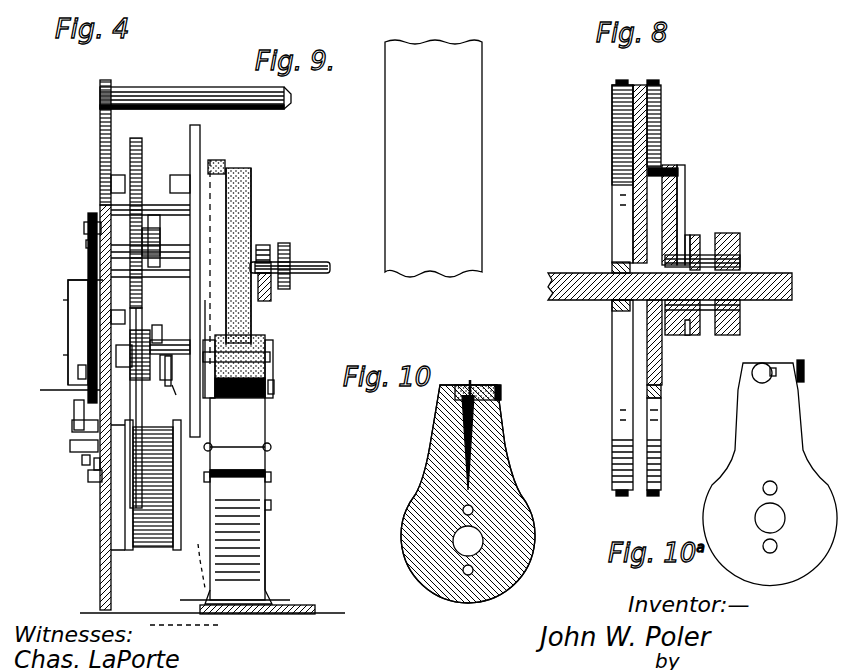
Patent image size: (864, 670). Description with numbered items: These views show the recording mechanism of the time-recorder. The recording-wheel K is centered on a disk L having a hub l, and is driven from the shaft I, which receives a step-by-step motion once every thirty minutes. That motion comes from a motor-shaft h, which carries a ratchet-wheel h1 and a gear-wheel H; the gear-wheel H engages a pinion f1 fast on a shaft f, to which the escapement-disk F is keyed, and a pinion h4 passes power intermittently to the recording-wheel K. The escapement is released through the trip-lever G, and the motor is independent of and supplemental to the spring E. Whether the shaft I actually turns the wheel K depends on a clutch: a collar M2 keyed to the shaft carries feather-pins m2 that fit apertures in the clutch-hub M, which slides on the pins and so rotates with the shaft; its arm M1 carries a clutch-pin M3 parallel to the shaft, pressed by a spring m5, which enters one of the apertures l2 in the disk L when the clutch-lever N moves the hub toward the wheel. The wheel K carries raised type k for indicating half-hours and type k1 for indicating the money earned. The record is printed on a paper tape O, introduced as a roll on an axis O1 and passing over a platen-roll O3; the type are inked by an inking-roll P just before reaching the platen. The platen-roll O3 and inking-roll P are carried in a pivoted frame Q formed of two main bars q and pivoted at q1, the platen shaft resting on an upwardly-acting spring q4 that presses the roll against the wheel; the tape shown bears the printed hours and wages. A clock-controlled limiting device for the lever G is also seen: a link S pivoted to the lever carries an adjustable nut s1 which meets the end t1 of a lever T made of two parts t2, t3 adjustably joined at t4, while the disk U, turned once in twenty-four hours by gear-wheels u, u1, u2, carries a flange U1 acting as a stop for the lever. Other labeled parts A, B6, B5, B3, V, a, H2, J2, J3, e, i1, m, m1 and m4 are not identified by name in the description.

In FIG. 4, the frame plate A is at (100, 197).
In FIG. 4, the top cross bar B6 is at (172, 96).
In FIG. 4, the vertical frame bar B5 is at (200, 140).
In FIG. 4, the base bar B3 is at (200, 585).
In FIG. 4, the guide rod V is at (225, 168).
In FIG. 4, the recording-wheel K is at (251, 186).
In FIG. 8, the recording-wheel K is at (556, 128).
In FIG. 4, the paper tape O is at (238, 501).
In FIG. 9, the paper tape O is at (408, 52).
In FIG. 4, the axis of the tape roll O1 is at (271, 505).
In FIG. 4, the platen-roll O3 is at (273, 368).
In FIG. 4, the inking-roll P is at (205, 302).
In FIG. 4, the pivoted frame Q is at (280, 550).
In FIG. 4, the main bars of frame Q q is at (204, 478).
In FIG. 4, the pivot of frame Q q1 is at (271, 477).
In FIG. 4, the upwardly-acting spring q4 is at (272, 388).
In FIG. 4, the cord a is at (199, 565).
In FIG. 4, the base plate H2 is at (265, 612).
In FIG. 4, the shaft I is at (345, 252).
In FIG. 8, the shaft I is at (572, 270).
In FIG. 4, the collar M2 is at (290, 246).
In FIG. 8, the collar M2 is at (740, 243).
In FIG. 4, the feather-pins m2 is at (266, 244).
In FIG. 8, the feather-pins m2 is at (695, 240).
In FIG. 4, the clutch-lever N is at (271, 290).
In FIG. 4, the clutch-hub M is at (266, 300).
In FIG. 8, the clutch-hub M is at (686, 230).
In FIG. 10, the clutch-hub M is at (516, 480).
In FIG. 10A, the clutch-hub M is at (770, 392).
In FIG. 8, the clutch arm M1 is at (685, 176).
In FIG. 10, the clutch arm M1 is at (525, 404).
In FIG. 8, the clutch-pin M3 is at (668, 165).
In FIG. 10, the clutch-pin M3 is at (468, 398).
In FIG. 10A, the clutch-pin M3 is at (762, 363).
In FIG. 10, the shaft hole m is at (468, 541).
In FIG. 10A, the shaft hole m is at (770, 518).
In FIG. 10, the pin holes m1 is at (470, 512).
In FIG. 10A, the pin holes m1 is at (774, 494).
In FIG. 8, the spindle m4 is at (680, 176).
In FIG. 8, the spring m5 is at (678, 170).
In FIG. 4, the rack J2 is at (142, 150).
In FIG. 4, the pinion J3 is at (155, 228).
In FIG. 4, the gear-wheel H is at (140, 330).
In FIG. 4, the motor-shaft h is at (172, 358).
In FIG. 4, the ratchet-wheel h1 is at (162, 325).
In FIG. 4, the pinion h4 is at (121, 308).
In FIG. 4, the escapement shaft f is at (170, 371).
In FIG. 4, the pinion f1 is at (170, 389).
In FIG. 4, the spring E is at (140, 500).
In FIG. 4, the drum shaft e is at (133, 528).
In FIG. 4, the trip-lever G is at (90, 482).
In FIG. 4, the adjustable nut s1 is at (84, 228).
In FIG. 4, the end of lever T t1 is at (86, 244).
In FIG. 4, the stop lever T is at (66, 282).
In FIG. 4, the upper part of lever T t2 is at (66, 303).
In FIG. 4, the lower part of lever T t3 is at (74, 398).
In FIG. 4, the adjustable connection t4 is at (66, 357).
In FIG. 4, the link S is at (78, 332).
In FIG. 4, the gear-wheel u is at (81, 370).
In FIG. 4, the gear-wheel u1 is at (82, 462).
In FIG. 4, the gear-wheel u2 is at (94, 466).
In FIG. 4, the escapement-disk F is at (64, 382).
In FIG. 4, the disk U is at (72, 422).
In FIG. 4, the stop flange U1 is at (70, 445).
In FIG. 8, the type for half-hours k is at (616, 82).
In FIG. 8, the type for money amounts k1 is at (660, 82).
In FIG. 8, the collar i1 is at (612, 310).
In FIG. 8, the hub l is at (618, 312).
In FIG. 8, the disk L is at (662, 360).
In FIG. 8, the apertures l2 is at (661, 391).